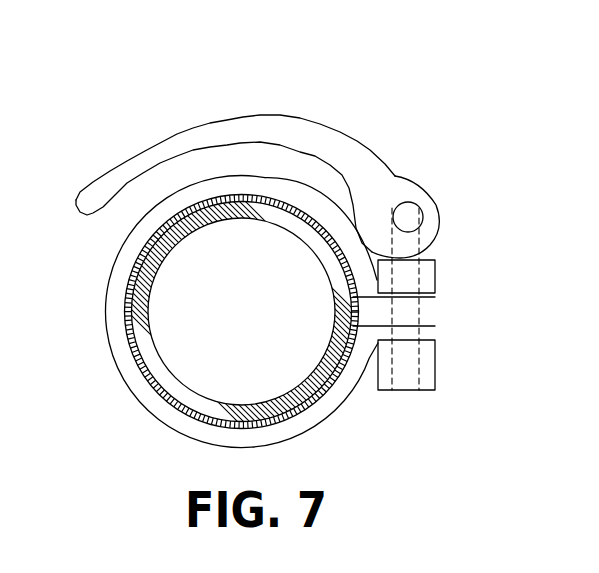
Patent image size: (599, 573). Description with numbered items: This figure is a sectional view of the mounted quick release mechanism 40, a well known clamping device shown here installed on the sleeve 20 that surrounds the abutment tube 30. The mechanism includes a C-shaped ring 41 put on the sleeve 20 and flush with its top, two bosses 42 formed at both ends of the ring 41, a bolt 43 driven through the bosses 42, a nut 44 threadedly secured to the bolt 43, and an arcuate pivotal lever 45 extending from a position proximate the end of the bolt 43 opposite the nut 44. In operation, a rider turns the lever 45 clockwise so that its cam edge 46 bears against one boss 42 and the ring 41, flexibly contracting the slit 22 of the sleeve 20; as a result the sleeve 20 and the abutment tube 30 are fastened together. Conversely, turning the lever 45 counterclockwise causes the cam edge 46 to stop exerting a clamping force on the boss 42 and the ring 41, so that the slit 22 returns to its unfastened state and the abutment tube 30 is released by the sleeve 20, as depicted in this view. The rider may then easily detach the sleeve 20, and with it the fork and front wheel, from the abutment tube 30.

The quick release mechanism 40 is at (256, 75).
The arcuate pivotal lever 45 is at (335, 143).
The bolt 43 is at (418, 233).
The cam edge 46 is at (420, 252).
The bosses 42 is at (433, 290).
The slit 22 is at (356, 313).
The nut 44 is at (433, 367).
The C-shaped ring 41 is at (120, 260).
The sleeve 20 is at (126, 347).
The abutment tube 30 is at (160, 398).